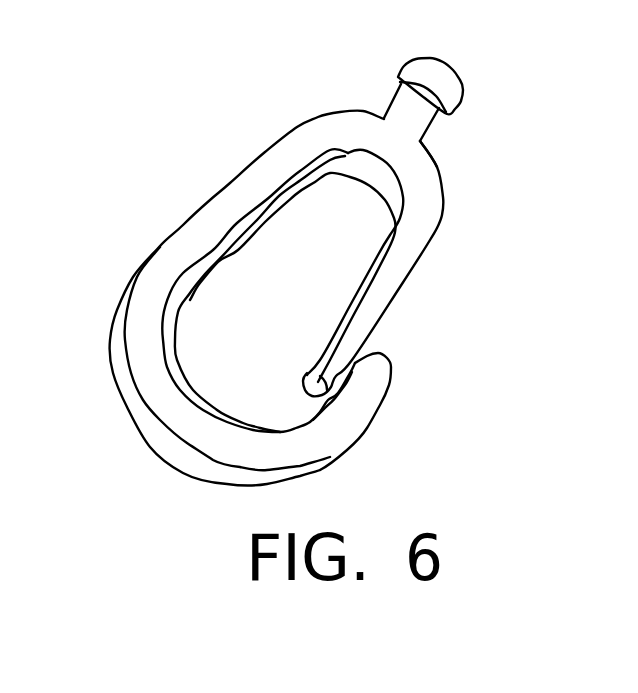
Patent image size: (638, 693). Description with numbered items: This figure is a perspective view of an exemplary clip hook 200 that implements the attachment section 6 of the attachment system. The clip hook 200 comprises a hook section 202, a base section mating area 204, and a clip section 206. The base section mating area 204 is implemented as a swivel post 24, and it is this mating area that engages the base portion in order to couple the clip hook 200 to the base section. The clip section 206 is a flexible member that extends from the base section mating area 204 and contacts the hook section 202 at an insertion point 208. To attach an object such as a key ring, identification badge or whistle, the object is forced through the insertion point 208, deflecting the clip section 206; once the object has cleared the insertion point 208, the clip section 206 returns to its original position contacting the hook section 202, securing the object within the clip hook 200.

The clip hook 200 is at (297, 127).
The hook section 202 is at (158, 248).
The base section mating area 204 is at (430, 126).
The clip section 206 is at (400, 287).
The insertion point 208 is at (355, 365).
The swivel post 24 is at (398, 80).
The attachment section 6 is at (427, 148).